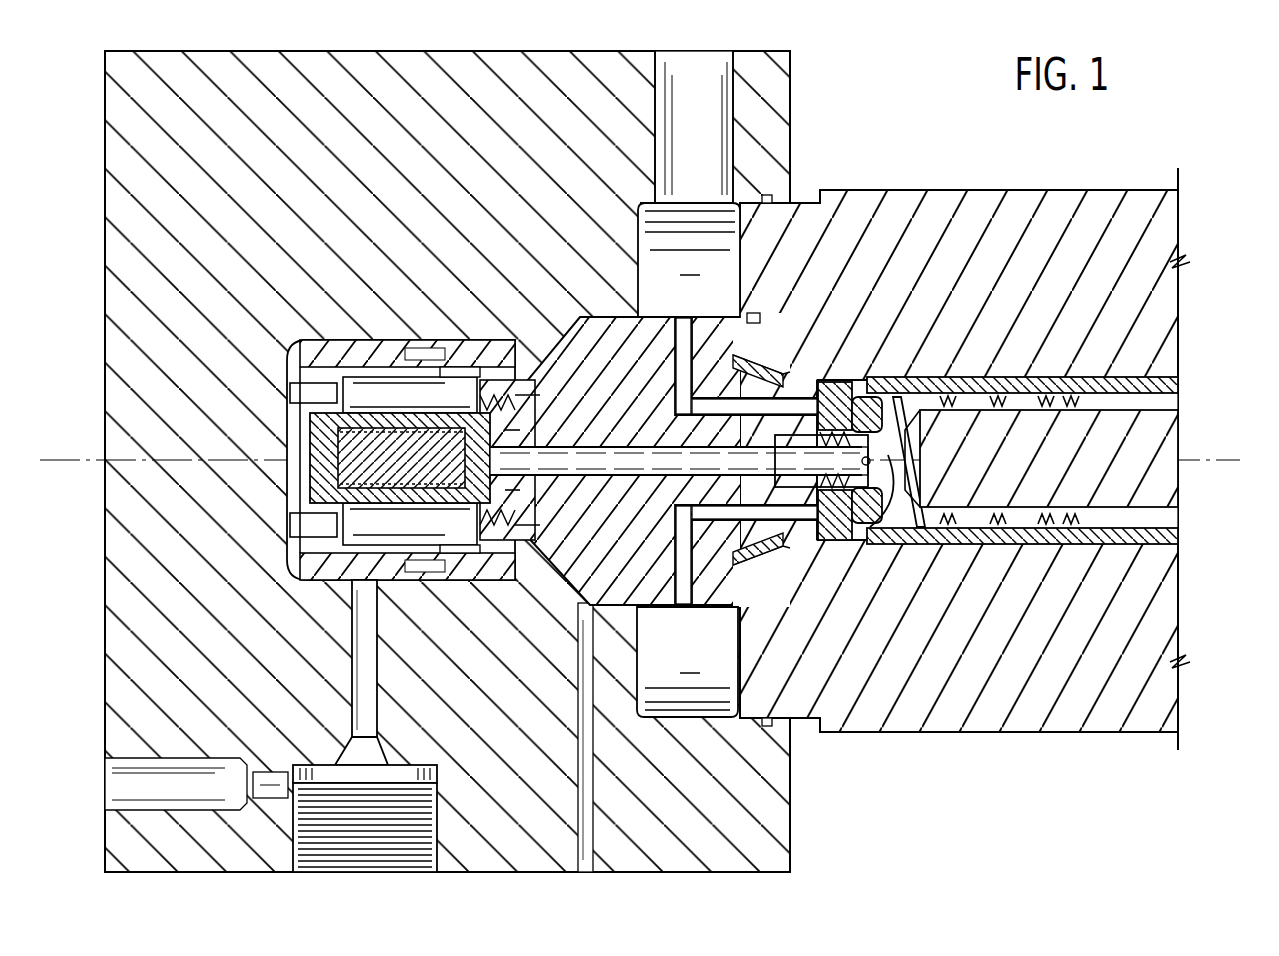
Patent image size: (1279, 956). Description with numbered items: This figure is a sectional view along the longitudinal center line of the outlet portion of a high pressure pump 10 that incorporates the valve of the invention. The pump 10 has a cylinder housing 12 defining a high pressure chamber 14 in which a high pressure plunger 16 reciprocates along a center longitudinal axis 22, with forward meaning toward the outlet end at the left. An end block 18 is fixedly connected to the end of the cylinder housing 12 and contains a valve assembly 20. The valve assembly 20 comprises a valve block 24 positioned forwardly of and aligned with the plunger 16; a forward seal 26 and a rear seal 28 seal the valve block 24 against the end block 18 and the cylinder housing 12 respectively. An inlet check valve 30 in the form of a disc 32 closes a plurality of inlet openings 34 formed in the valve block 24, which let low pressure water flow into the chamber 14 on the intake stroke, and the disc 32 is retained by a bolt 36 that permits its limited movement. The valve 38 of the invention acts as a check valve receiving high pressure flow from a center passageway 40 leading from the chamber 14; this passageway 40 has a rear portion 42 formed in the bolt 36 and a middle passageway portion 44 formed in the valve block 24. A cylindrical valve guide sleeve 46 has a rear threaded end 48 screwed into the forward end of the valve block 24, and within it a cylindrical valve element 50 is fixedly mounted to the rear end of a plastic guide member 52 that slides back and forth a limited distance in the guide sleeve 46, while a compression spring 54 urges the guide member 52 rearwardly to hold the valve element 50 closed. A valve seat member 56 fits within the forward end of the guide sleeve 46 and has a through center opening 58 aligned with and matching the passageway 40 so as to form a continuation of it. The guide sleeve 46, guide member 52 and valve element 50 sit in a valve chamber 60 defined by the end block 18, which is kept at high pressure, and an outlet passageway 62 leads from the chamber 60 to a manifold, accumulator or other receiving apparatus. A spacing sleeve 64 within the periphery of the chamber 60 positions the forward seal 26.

The pump 10 is at (886, 150).
The cylinder housing 12 is at (935, 190).
The high pressure chamber 14 is at (1015, 393).
The high pressure plunger 16 is at (1130, 430).
The end block 18 is at (553, 51).
The valve assembly 20 is at (591, 314).
The center longitudinal axis 22 is at (651, 435).
The valve block 24 is at (650, 325).
The forward seal 26 is at (505, 340).
The rear seal 28 is at (768, 345).
The inlet check valve 30 is at (845, 365).
The disc 32 is at (852, 385).
The inlet openings 34 is at (790, 385).
The bolt 36 is at (876, 528).
The valve 38 is at (450, 340).
The center passageway 40 is at (614, 477).
The rear portion 42 is at (916, 470).
The middle passageway portion 44 is at (604, 490).
The valve guide sleeve 46 is at (325, 396).
The rear threaded end 48 is at (540, 400).
The valve element 50 is at (470, 545).
The guide member 52 is at (325, 470).
The compression spring 54 is at (335, 492).
The valve seat member 56 is at (525, 420).
The through center opening 58 is at (515, 440).
The valve chamber 60 is at (318, 340).
The outlet passageway 62 is at (356, 624).
The spacing sleeve 64 is at (372, 340).